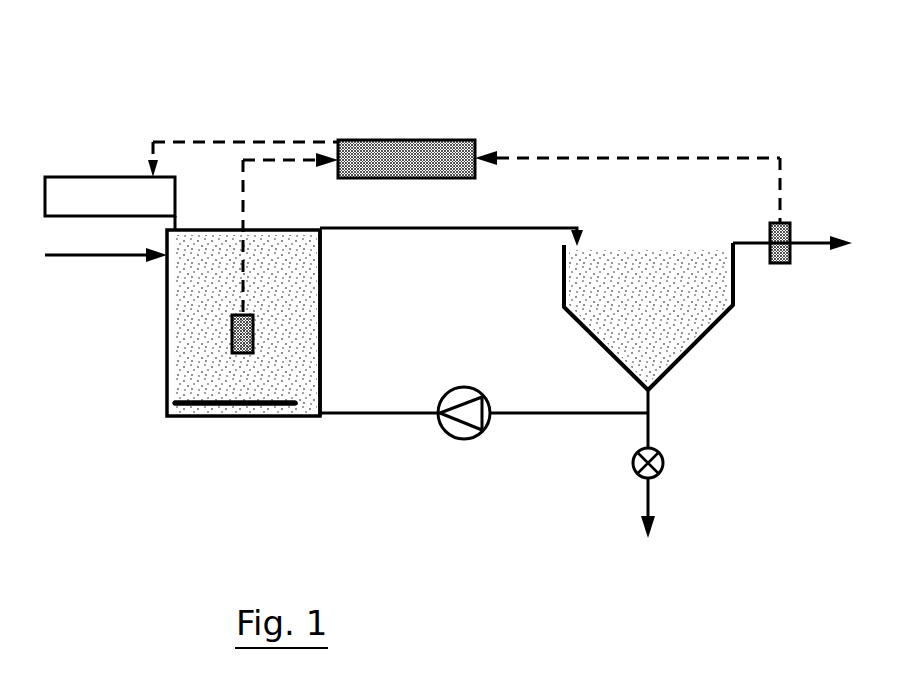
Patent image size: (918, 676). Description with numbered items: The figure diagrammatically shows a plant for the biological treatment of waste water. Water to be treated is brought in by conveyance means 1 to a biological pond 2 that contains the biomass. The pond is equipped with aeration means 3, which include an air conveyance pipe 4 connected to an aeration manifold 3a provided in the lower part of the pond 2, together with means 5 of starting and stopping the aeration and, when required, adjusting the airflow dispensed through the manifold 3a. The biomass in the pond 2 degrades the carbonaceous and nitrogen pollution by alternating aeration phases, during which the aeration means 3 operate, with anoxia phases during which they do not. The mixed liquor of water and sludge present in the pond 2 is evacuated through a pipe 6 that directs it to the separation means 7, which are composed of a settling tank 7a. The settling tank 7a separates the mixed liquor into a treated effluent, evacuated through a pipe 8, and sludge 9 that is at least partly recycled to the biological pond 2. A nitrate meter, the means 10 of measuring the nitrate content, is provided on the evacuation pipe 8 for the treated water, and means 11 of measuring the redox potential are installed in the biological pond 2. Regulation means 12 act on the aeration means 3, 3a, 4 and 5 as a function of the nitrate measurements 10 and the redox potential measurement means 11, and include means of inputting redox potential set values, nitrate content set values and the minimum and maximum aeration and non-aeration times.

The conveyance means 1 is at (115, 263).
The biological pond 2 is at (322, 372).
The aeration means 3 is at (258, 406).
The aeration manifold 3a is at (245, 401).
The air conveyance pipe 4 is at (177, 227).
The means of starting and stopping aeration 5 is at (113, 192).
The pipe 6 is at (432, 229).
The separation means 7 is at (700, 248).
The settling tank 7a is at (648, 317).
The pipe 8 is at (752, 246).
The sludge 9 is at (537, 415).
The means of measuring the nitrate content 10 is at (793, 226).
The means of measuring the redox potential 11 is at (255, 326).
The regulation means 12 is at (453, 143).